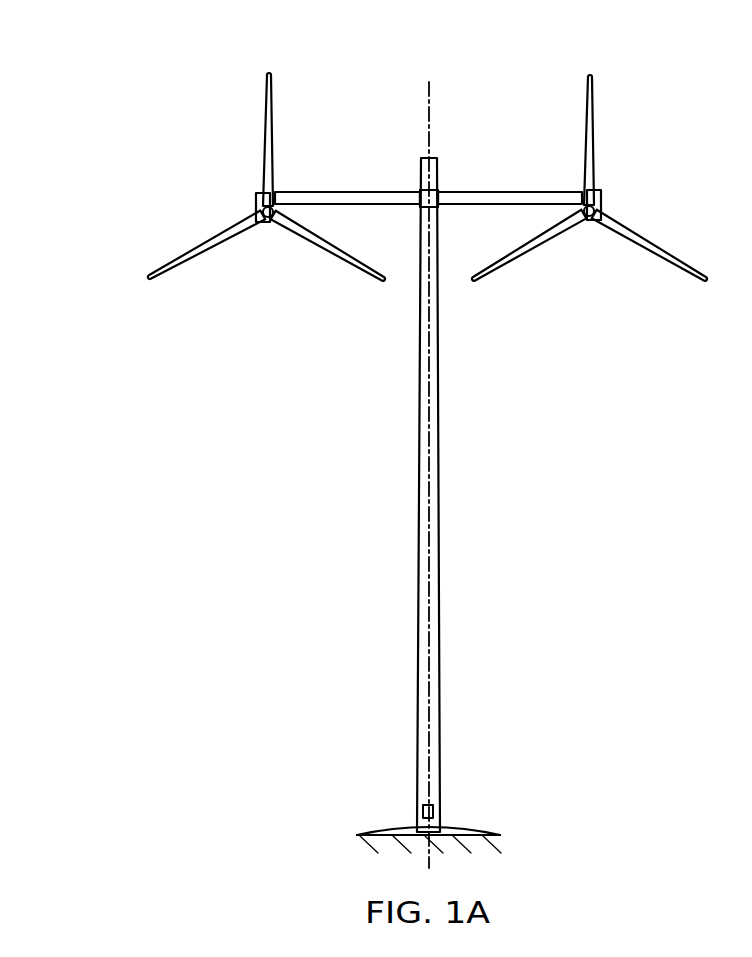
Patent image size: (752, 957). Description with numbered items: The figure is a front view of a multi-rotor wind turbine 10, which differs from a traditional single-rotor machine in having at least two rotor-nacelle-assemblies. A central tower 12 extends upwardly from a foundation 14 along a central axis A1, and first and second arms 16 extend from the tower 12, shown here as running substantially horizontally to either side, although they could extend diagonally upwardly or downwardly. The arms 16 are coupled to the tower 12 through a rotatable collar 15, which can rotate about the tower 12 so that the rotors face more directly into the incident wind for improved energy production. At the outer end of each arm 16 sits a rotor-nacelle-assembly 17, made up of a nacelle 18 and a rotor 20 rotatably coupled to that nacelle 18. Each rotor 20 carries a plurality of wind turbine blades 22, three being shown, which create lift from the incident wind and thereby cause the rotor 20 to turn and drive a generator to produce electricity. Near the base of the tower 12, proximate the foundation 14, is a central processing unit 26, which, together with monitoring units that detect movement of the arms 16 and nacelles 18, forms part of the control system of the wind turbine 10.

The multi-rotor wind turbine 10 is at (60, 91).
The central tower 12 is at (440, 525).
The foundation 14 is at (475, 831).
The rotatable collar 15 is at (438, 191).
The first and second arms 16 is at (303, 192).
The rotor-nacelle-assembly 17 is at (218, 222).
The nacelle 18 is at (266, 222).
The rotor 20 is at (258, 111).
The wind turbine blade 22 is at (262, 150).
The central processing unit 26 is at (436, 810).
The central axis A1 is at (426, 90).